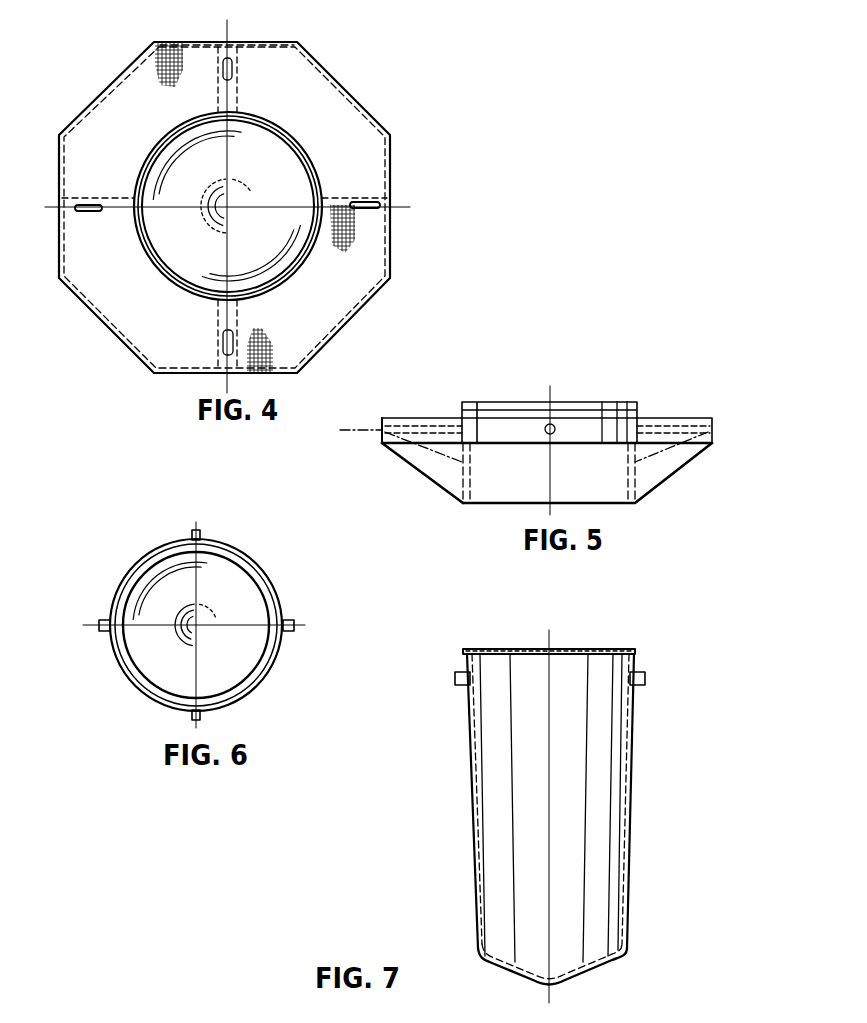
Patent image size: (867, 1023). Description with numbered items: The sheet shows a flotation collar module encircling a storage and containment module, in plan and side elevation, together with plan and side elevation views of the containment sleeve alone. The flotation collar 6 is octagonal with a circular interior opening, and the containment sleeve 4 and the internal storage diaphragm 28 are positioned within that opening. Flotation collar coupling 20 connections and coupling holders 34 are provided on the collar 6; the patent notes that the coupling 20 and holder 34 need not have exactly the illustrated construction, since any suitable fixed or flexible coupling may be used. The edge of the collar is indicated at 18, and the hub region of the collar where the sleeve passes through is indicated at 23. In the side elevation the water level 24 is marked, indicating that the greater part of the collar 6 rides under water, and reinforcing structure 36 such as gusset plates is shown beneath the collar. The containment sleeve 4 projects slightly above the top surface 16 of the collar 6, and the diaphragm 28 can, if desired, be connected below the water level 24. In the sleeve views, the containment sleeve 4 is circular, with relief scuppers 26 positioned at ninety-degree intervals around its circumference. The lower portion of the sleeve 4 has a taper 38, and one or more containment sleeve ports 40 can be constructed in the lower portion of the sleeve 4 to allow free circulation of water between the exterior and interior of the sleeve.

In FIG. 4, the containment sleeve 4 is at (317, 180).
In FIG. 5, the containment sleeve 4 is at (463, 405).
In FIG. 6, the containment sleeve 4 is at (259, 567).
In FIG. 7, the containment sleeve 4 is at (636, 722).
In FIG. 4, the flotation collar 6 is at (347, 93).
In FIG. 5, the flotation collar 6 is at (382, 438).
In FIG. 5, the top surface 16 is at (651, 418).
In FIG. 4, the plate edge 18 is at (281, 43).
In FIG. 4, the flotation collar coupling 20 is at (370, 193).
In FIG. 5, the flotation collar coupling 20 is at (552, 424).
In FIG. 5, the hub shoulder 23 is at (462, 412).
In FIG. 5, the water level 24 is at (383, 420).
In FIG. 6, the relief scupper 26 is at (203, 536).
In FIG. 7, the relief scupper 26 is at (641, 676).
In FIG. 4, the internal storage diaphragm 28 is at (292, 152).
In FIG. 4, the coupling holder 34 is at (369, 207).
In FIG. 5, the reinforcing structure 36 is at (436, 466).
In FIG. 6, the taper 38 is at (140, 660).
In FIG. 7, the taper 38 is at (472, 856).
In FIG. 7, the containment sleeve port 40 is at (495, 966).